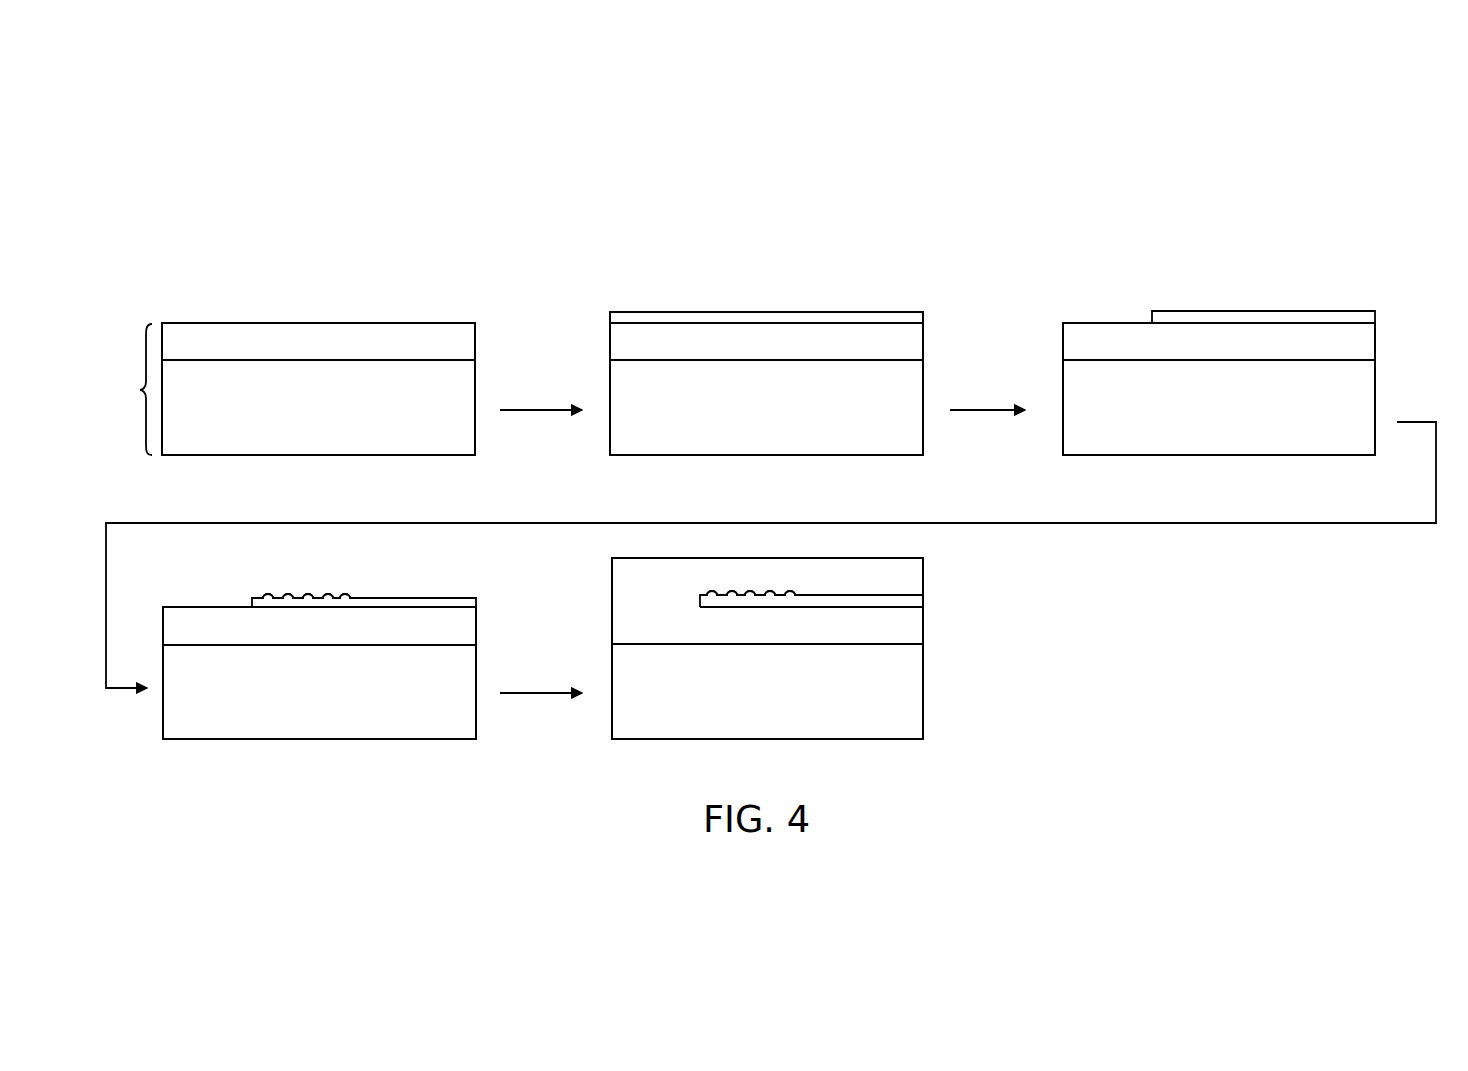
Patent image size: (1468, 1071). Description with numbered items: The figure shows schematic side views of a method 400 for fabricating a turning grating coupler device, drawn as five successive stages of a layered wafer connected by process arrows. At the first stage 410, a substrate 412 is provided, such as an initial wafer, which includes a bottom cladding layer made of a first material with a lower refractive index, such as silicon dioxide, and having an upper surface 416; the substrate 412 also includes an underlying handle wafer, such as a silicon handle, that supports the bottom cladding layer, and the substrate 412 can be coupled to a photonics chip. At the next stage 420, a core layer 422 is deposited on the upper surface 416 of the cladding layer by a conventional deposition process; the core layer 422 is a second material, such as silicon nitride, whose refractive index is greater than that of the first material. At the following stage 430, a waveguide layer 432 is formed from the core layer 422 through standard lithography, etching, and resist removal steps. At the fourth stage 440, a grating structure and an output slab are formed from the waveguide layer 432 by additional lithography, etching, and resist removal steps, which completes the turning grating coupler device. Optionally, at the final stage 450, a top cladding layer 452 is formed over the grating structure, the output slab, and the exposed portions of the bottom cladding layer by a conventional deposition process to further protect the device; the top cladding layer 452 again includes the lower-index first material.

The method 400 is at (703, 208).
The initial stage 410 is at (190, 300).
The substrate 412 is at (280, 389).
The upper surface 416 is at (374, 322).
The core layer deposition stage 420 is at (643, 300).
The core layer 422 is at (800, 312).
The waveguide layer formation stage 430 is at (1110, 300).
The waveguide layer 432 is at (1268, 311).
The grating formation stage 440 is at (190, 600).
The top cladding stage 450 is at (620, 548).
The top cladding layer 452 is at (912, 566).